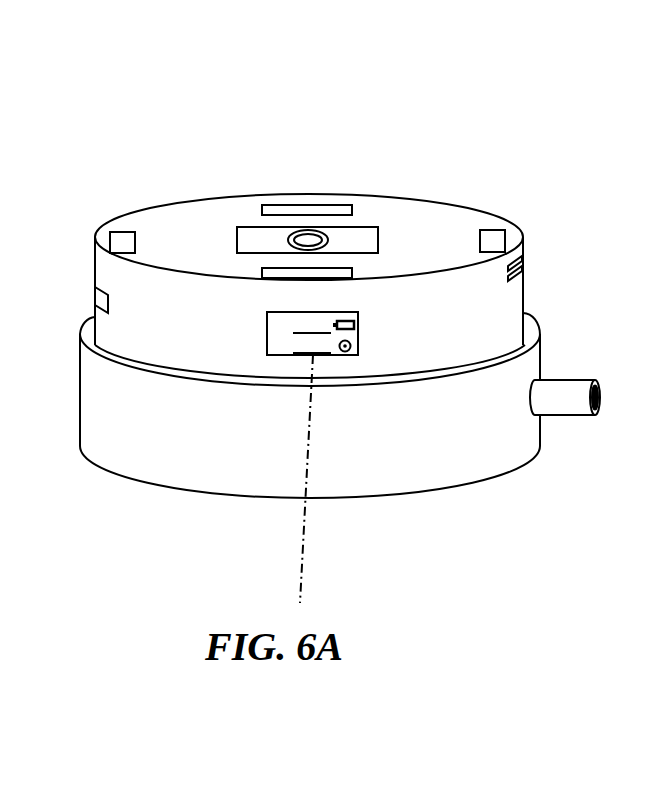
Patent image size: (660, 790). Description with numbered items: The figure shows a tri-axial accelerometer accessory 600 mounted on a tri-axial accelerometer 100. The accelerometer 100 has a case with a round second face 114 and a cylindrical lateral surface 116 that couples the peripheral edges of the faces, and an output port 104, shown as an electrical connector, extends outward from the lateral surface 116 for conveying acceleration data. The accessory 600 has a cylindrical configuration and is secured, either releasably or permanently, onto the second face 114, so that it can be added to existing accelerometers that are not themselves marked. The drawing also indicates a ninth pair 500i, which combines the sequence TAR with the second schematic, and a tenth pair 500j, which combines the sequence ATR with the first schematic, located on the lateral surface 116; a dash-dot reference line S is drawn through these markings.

The tri-axial accelerometer accessory 600 is at (174, 200).
The tri-axial accelerometer 100 is at (306, 435).
The output port 104 is at (572, 381).
The second face 114 is at (84, 331).
The lateral surface 116 is at (457, 466).
The ninth pair 500i is at (368, 325).
The tenth pair 500j is at (258, 345).
The axis of symmetry S is at (300, 603).